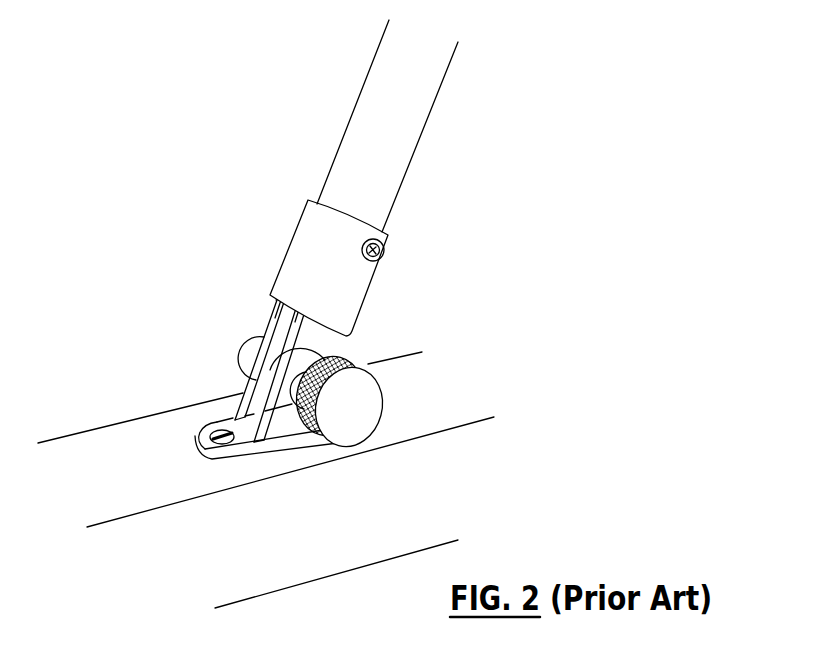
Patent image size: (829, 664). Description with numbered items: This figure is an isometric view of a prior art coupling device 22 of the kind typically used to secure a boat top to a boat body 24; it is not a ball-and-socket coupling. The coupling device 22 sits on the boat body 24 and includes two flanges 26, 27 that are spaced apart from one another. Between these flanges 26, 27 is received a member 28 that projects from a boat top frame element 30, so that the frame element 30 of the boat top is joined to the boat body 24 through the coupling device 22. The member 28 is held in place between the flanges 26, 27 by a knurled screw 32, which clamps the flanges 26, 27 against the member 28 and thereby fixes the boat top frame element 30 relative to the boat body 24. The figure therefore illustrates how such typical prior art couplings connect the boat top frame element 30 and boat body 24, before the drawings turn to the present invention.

The coupling device 22 is at (217, 210).
The boat body 24 is at (114, 413).
The flange 26 is at (246, 381).
The flange 27 is at (281, 440).
The member 28 is at (274, 312).
The boat top frame element 30 is at (392, 214).
The knurled screw 32 is at (349, 357).